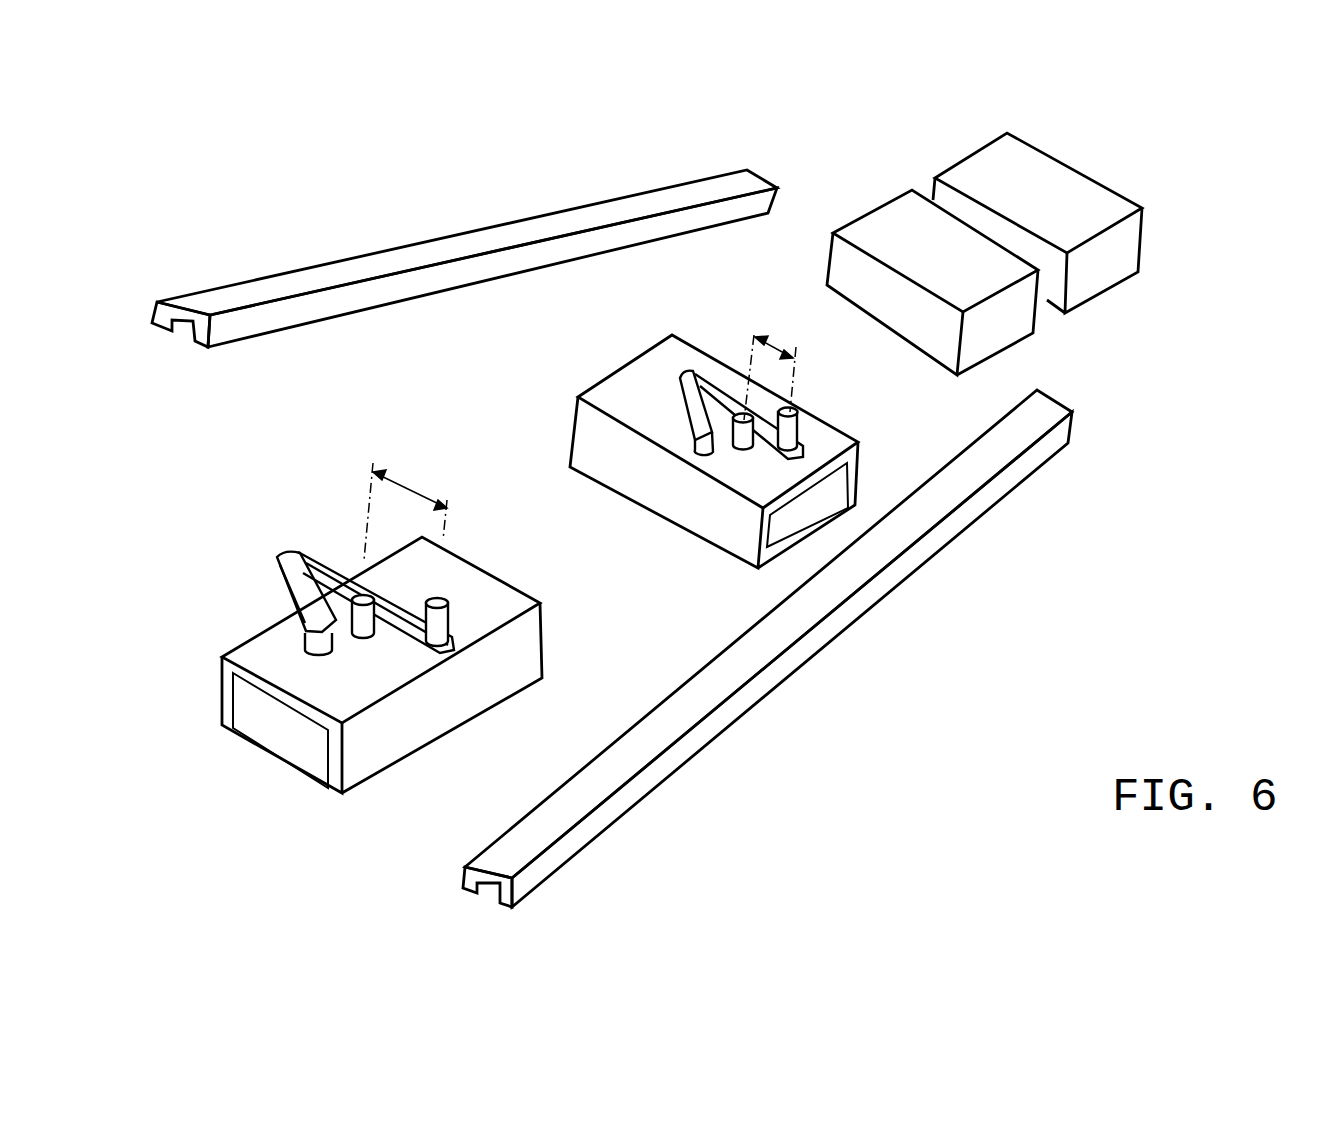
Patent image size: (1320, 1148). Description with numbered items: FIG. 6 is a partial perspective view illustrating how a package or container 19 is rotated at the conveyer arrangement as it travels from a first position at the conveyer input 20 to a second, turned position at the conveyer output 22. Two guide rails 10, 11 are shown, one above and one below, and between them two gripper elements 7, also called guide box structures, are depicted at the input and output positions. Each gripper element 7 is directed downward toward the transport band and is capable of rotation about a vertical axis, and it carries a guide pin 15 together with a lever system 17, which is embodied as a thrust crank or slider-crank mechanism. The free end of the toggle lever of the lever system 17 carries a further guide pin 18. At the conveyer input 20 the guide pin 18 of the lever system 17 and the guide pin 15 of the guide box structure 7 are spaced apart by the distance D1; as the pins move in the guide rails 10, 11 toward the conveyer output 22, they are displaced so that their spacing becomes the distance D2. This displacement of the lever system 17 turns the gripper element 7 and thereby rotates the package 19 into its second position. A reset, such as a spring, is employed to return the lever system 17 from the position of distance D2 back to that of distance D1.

The gripper element 7 is at (583, 452).
The guide rail 10 is at (375, 260).
The guide rail 11 is at (628, 757).
The guide pin 15 is at (737, 433).
The lever system 17 is at (710, 393).
The guide pin 18 is at (797, 425).
The package 19 is at (1067, 180).
The conveyer input 20 is at (819, 198).
The conveyer output 22 is at (340, 850).
The distance D1 is at (773, 342).
The distance D2 is at (403, 493).